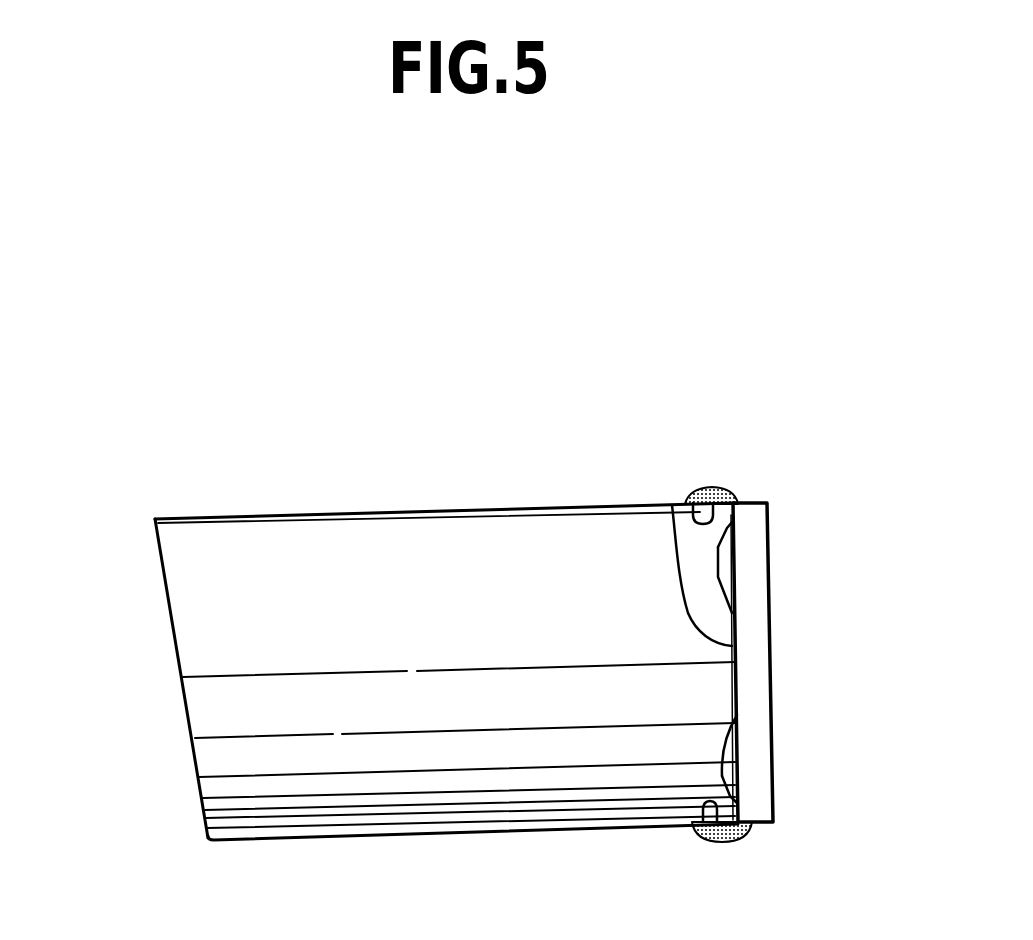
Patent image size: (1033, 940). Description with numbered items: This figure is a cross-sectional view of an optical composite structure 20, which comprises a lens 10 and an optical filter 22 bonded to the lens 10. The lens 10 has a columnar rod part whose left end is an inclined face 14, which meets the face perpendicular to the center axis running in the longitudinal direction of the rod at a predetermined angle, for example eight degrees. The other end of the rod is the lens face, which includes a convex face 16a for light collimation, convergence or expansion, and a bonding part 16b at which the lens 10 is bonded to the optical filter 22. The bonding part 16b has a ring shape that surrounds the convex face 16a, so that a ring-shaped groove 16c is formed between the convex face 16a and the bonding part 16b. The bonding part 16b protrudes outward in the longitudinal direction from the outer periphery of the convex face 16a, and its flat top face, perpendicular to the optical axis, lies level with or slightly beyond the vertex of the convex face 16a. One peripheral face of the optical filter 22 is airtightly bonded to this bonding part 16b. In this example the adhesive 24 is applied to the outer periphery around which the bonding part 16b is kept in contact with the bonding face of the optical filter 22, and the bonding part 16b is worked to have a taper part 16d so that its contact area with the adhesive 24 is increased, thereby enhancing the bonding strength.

The lens 10 is at (307, 513).
The inclined face 14 is at (183, 697).
The optical composite structure 20 is at (555, 413).
The optical filter 22 is at (772, 665).
The convex face 16a is at (672, 505).
The bonding part 16b is at (718, 522).
The ring-shaped groove 16c is at (727, 557).
The taper part 16d is at (697, 490).
The adhesive 24 is at (732, 483).